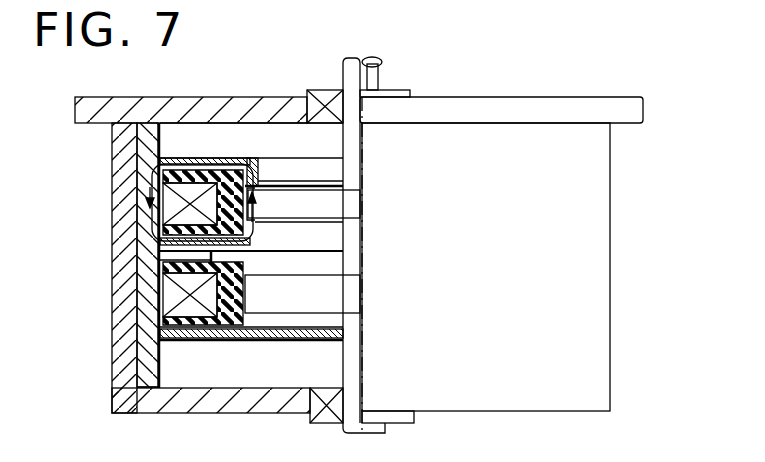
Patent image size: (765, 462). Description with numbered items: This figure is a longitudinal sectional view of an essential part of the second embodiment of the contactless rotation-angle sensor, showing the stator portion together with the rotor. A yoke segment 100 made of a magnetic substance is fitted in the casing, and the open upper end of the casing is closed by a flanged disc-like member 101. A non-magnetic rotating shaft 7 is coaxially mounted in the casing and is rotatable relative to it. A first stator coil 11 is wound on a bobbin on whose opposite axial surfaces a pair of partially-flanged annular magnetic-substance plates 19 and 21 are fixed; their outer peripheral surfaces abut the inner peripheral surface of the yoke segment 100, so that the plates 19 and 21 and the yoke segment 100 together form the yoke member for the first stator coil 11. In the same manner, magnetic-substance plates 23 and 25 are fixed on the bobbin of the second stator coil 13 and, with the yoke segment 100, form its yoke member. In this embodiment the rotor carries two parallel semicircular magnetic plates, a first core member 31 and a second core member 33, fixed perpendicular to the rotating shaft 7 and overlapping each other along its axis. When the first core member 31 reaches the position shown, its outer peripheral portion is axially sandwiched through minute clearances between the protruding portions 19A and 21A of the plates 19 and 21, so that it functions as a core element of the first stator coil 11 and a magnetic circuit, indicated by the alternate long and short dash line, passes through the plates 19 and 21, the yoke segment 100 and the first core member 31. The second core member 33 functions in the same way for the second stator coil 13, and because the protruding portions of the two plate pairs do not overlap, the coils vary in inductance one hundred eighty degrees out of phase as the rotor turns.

The yoke segment 100 is at (143, 153).
The flanged disc-like member 101 is at (230, 103).
The rotating shaft 7 is at (372, 74).
The magnetic-substance plate 19 is at (177, 160).
The protruding portion 19A is at (258, 172).
The first stator coil 11 is at (170, 204).
The magnetic-substance plate 21 is at (153, 232).
The protruding portion 21A is at (250, 243).
The magnetic-substance plate 23 is at (160, 258).
The second stator coil 13 is at (165, 295).
The first core member 31 is at (335, 206).
The second core member 33 is at (345, 292).
The magnetic-substance plate 25 is at (188, 340).